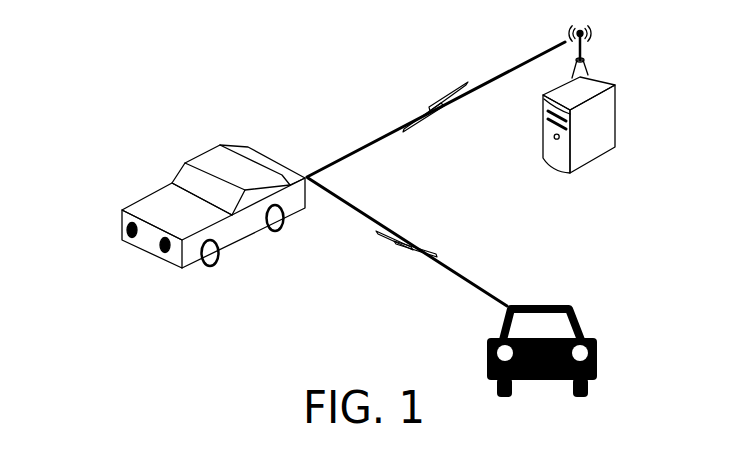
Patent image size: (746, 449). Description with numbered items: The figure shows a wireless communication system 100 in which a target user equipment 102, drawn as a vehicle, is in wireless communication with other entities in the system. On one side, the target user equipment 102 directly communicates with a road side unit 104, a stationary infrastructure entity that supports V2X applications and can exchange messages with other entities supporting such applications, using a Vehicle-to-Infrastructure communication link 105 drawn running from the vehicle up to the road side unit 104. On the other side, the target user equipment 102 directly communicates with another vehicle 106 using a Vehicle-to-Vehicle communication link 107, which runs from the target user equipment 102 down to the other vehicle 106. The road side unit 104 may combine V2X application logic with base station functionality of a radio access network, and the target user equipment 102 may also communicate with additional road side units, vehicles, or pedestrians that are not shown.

The wireless communication system 100 is at (109, 79).
The target user equipment 102 is at (135, 203).
The road side unit 104 is at (616, 108).
The Vehicle-to-Infrastructure communication link 105 is at (388, 133).
The another vehicle 106 is at (585, 331).
The Vehicle-to-Vehicle communication link 107 is at (456, 276).